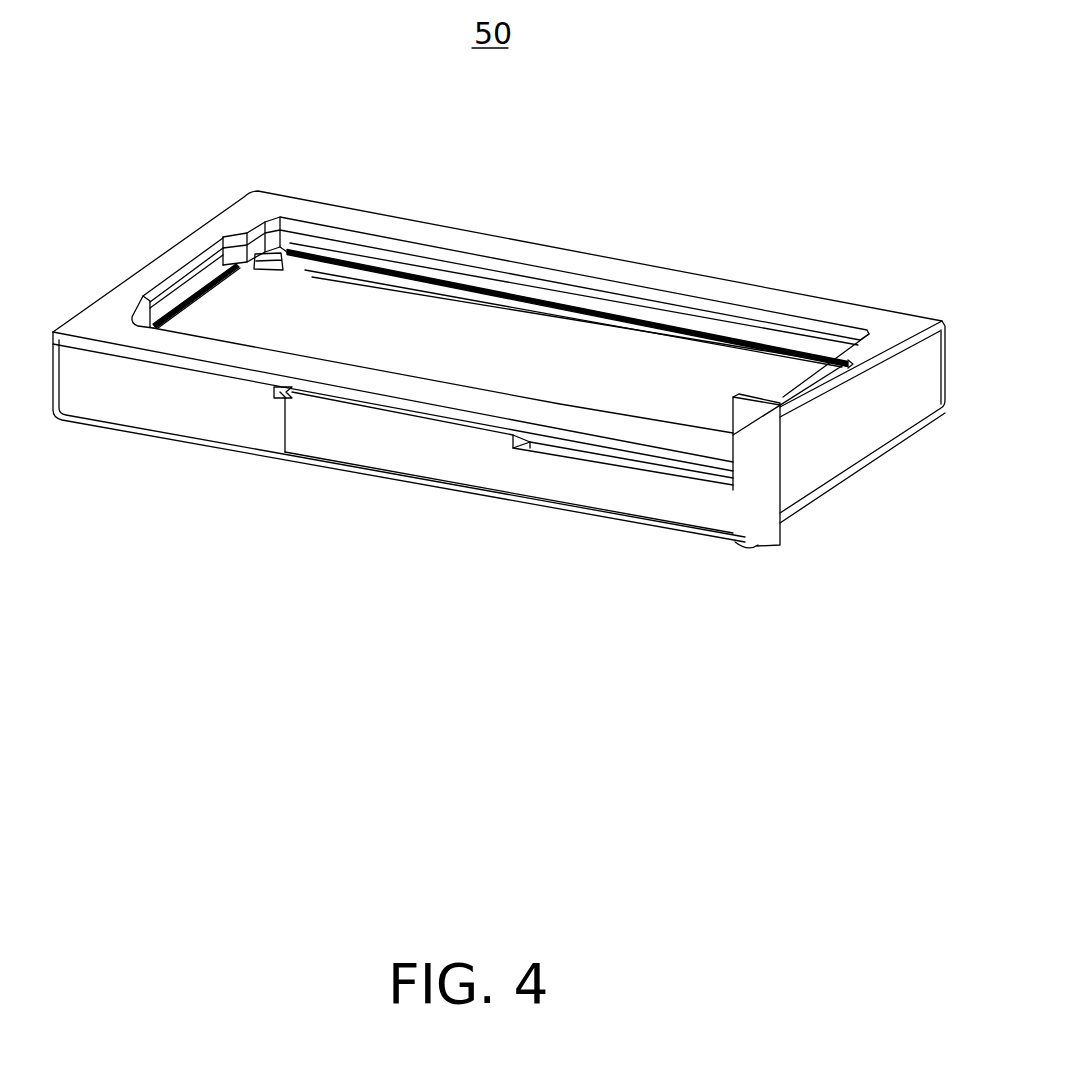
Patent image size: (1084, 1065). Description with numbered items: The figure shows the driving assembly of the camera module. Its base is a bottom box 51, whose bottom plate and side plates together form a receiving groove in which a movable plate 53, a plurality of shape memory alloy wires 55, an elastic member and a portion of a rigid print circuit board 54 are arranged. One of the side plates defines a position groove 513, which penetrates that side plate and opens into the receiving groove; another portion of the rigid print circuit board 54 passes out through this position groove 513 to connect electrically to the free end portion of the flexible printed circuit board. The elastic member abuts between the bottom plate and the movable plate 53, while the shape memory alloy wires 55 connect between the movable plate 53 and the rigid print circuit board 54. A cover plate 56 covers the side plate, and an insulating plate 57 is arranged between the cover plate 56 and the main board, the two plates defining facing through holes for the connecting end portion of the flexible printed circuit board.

The bottom box 51 is at (857, 442).
The movable plate 53 is at (517, 355).
The rigid print circuit board 54 is at (385, 262).
The shape memory alloy wires 55 is at (620, 312).
The cover plate 56 is at (253, 200).
The insulating plate 57 is at (315, 237).
The position groove 513 is at (281, 398).